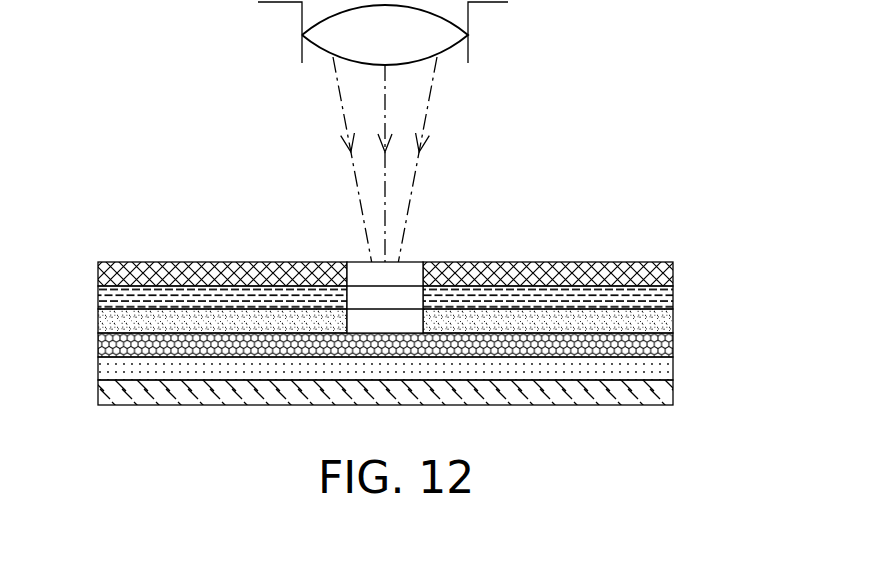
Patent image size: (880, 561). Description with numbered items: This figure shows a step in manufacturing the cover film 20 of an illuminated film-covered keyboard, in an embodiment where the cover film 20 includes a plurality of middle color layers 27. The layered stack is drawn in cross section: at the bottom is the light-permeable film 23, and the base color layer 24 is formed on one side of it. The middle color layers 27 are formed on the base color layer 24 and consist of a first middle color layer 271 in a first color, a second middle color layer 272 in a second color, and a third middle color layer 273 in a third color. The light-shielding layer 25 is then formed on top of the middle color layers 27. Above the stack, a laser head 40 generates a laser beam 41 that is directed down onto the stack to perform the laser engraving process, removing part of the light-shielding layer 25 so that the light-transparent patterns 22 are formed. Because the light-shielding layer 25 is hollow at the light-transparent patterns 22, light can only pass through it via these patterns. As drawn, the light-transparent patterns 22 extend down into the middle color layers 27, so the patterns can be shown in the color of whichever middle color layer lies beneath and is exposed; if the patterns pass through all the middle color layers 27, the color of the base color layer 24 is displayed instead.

The cover film 20 is at (160, 262).
The light-transparent patterns 22 is at (410, 265).
The light-permeable film 23 is at (645, 398).
The base color layer 24 is at (660, 372).
The light-shielding layer 25 is at (673, 272).
The middle color layers 27 is at (450, 320).
The first middle color layer 271 is at (660, 298).
The second middle color layer 272 is at (660, 318).
The third middle color layer 273 is at (662, 347).
The laser head 40 is at (443, 32).
The laser beam 41 is at (413, 195).